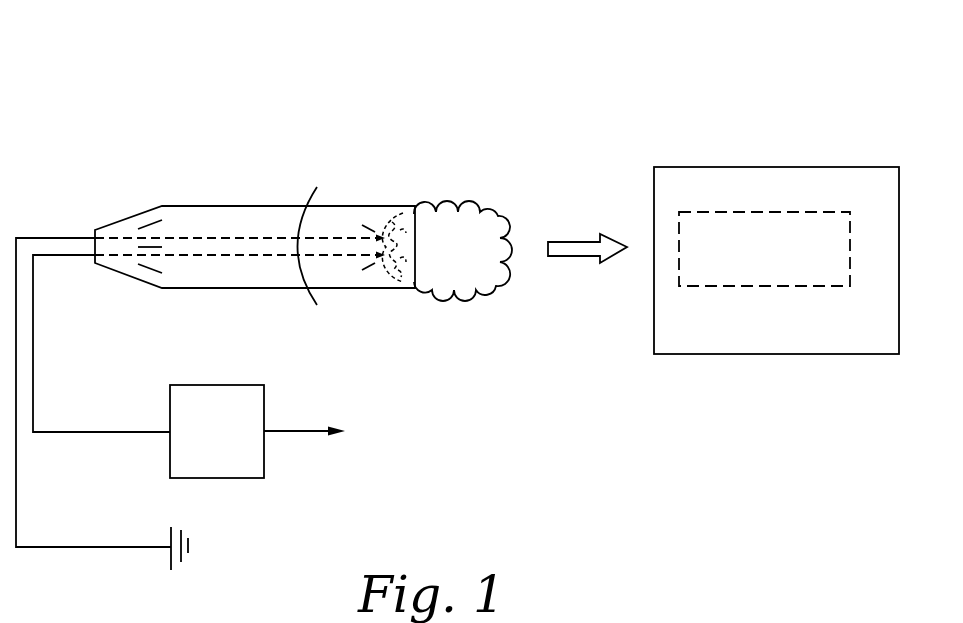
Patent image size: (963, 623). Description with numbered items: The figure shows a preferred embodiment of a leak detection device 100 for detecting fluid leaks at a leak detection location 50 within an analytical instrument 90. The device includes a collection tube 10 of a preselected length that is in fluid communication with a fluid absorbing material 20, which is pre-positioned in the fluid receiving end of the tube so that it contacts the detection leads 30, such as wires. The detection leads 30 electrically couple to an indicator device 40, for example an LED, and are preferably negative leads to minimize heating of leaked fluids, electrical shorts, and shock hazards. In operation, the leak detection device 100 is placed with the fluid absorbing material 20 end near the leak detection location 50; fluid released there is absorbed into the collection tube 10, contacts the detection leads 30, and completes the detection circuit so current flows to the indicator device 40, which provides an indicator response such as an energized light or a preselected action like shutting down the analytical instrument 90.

The leak detection device 100 is at (114, 84).
The collection tube 10 is at (223, 205).
The fluid absorbing material 20 is at (438, 233).
The detection leads 30 is at (250, 249).
The indicator device 40 is at (196, 447).
The leak detection location 50 is at (744, 265).
The analytical instrument 90 is at (830, 334).